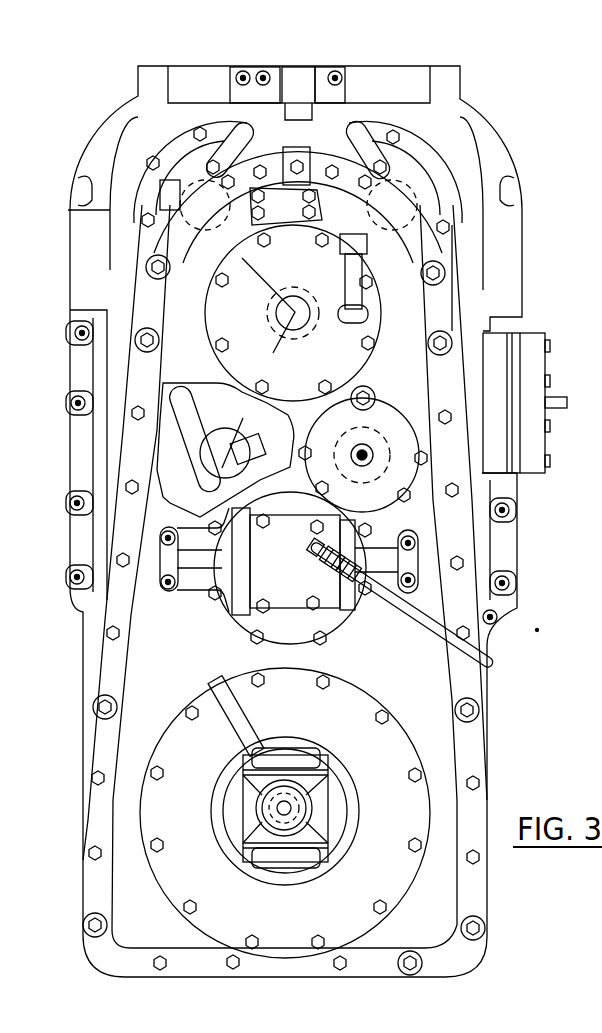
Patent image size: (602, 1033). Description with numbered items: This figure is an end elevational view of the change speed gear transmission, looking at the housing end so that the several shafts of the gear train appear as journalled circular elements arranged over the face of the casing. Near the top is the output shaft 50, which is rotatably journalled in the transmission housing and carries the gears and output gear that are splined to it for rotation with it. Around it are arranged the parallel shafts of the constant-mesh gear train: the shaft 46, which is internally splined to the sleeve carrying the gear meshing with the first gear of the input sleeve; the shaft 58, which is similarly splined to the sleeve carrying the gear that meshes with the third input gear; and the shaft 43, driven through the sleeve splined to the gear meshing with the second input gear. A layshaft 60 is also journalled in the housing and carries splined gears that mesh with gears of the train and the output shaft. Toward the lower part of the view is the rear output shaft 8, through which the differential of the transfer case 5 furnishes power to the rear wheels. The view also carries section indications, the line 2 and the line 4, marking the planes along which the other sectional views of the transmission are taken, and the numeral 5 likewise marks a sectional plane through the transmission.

The section line 2- 2 is at (128, 137).
The section line 4- 4 is at (402, 295).
The transfer case 5 is at (406, 516).
The rear output shaft 8 is at (312, 793).
The shaft 43 is at (200, 455).
The shaft 46 is at (298, 207).
The output shaft 50 is at (296, 292).
The shaft 58 is at (365, 206).
The layshaft 60 is at (363, 449).